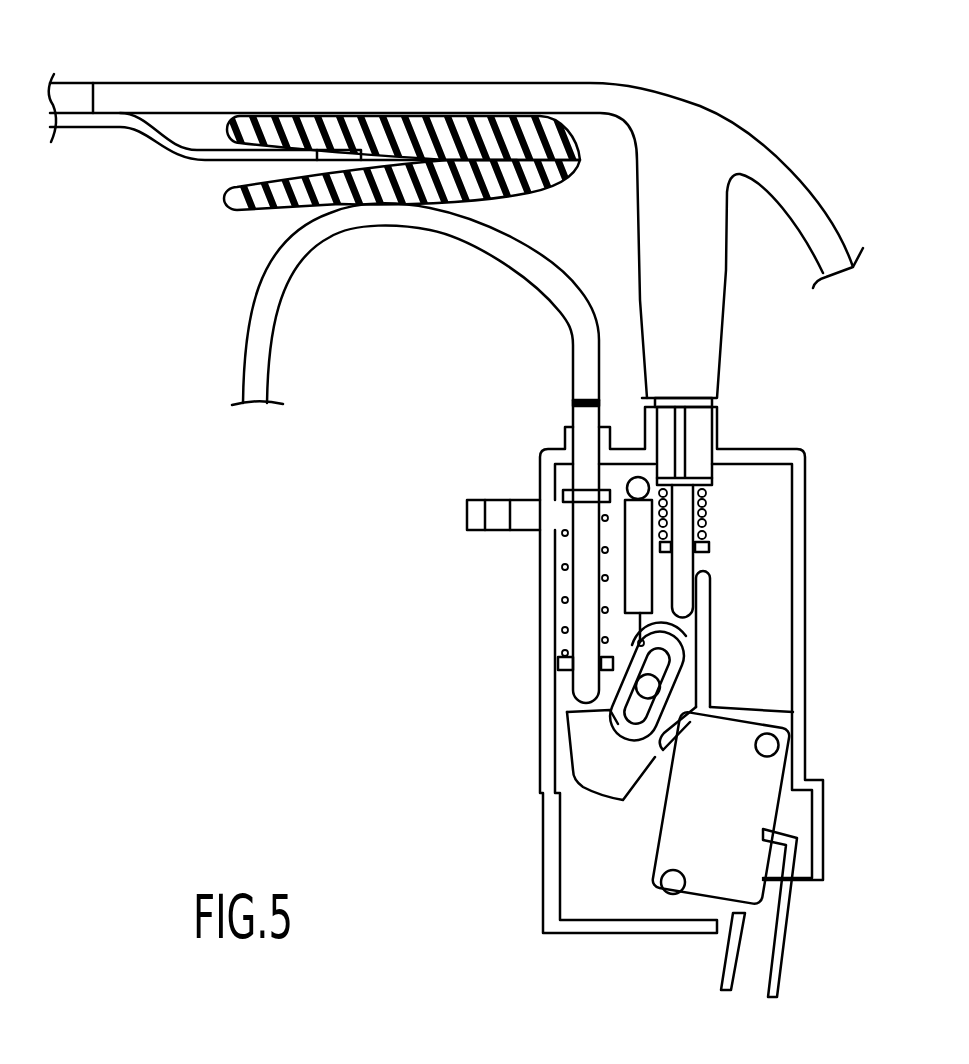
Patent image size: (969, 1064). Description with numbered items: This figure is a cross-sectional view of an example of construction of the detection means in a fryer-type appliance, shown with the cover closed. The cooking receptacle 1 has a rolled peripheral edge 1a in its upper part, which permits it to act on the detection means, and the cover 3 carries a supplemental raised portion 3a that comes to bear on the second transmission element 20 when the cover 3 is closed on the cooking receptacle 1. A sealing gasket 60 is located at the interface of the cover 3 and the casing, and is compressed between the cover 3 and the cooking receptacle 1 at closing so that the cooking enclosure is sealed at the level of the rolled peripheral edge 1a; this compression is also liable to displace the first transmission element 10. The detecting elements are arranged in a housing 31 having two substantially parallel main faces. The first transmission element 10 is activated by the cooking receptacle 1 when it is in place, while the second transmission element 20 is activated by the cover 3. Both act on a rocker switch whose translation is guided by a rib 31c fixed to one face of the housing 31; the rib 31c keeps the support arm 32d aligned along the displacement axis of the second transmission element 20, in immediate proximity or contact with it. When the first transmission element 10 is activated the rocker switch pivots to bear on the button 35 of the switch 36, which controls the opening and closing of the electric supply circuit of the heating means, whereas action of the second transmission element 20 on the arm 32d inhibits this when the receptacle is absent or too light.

The cooking receptacle 1 is at (243, 352).
The rolled peripheral edge 1a is at (583, 332).
The cover 3 is at (716, 131).
The supplemental raised portion 3a is at (687, 307).
The transmission element 10 is at (583, 422).
The second transmission element 20 is at (697, 435).
The housing 31 is at (823, 832).
The rib 31c is at (710, 623).
The bearing arm 32d is at (683, 643).
The button 35 is at (660, 800).
The switch 36 is at (733, 783).
The sealing gasket 60 is at (403, 128).